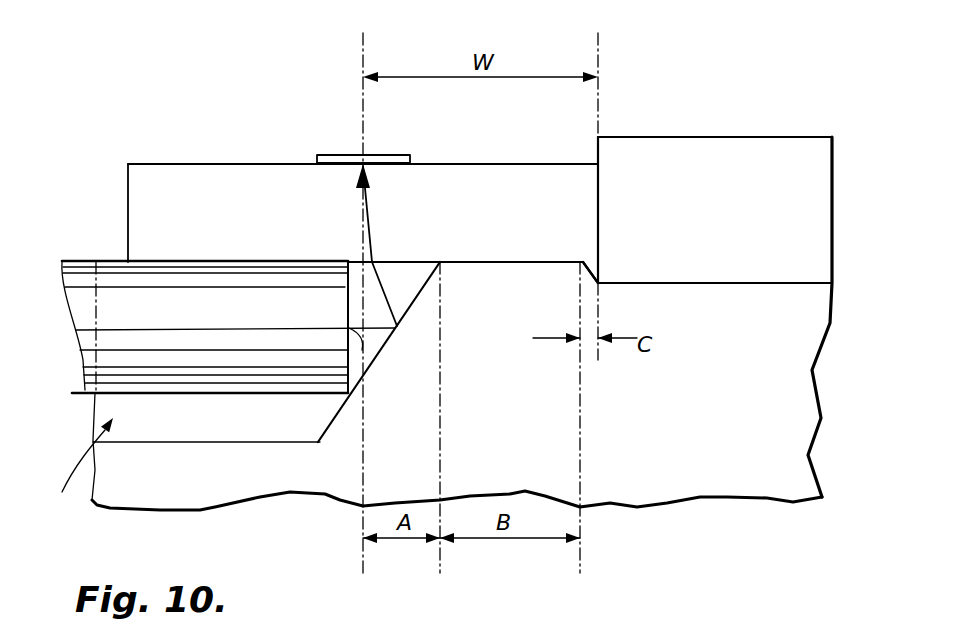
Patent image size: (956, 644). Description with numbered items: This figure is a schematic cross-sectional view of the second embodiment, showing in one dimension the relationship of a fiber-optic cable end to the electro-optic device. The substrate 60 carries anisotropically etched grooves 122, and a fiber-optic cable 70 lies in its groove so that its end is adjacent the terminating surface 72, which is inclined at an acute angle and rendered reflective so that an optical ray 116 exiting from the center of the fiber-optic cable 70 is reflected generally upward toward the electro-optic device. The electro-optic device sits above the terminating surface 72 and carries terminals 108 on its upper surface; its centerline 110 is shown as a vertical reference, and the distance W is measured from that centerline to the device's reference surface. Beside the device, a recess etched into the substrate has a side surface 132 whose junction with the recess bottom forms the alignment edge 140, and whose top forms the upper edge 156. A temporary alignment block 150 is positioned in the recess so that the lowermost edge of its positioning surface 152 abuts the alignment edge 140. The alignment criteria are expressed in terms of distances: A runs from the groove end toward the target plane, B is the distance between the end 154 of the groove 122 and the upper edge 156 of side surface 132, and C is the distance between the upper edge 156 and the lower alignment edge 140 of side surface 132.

The substrate 60 is at (725, 487).
The fiber-optic cable 70 is at (86, 262).
The terminating surface 72 is at (418, 300).
The terminals 108 is at (325, 155).
The centerline 110 is at (363, 52).
The optical ray 116 is at (348, 352).
The grooves 122 is at (76, 475).
The side surface 132 is at (598, 280).
The alignment edge 140 is at (598, 282).
The temporary alignment block 150 is at (778, 145).
The positioning surface 152 is at (363, 126).
The end of groove 154 is at (437, 262).
The upper edge 156 is at (592, 276).